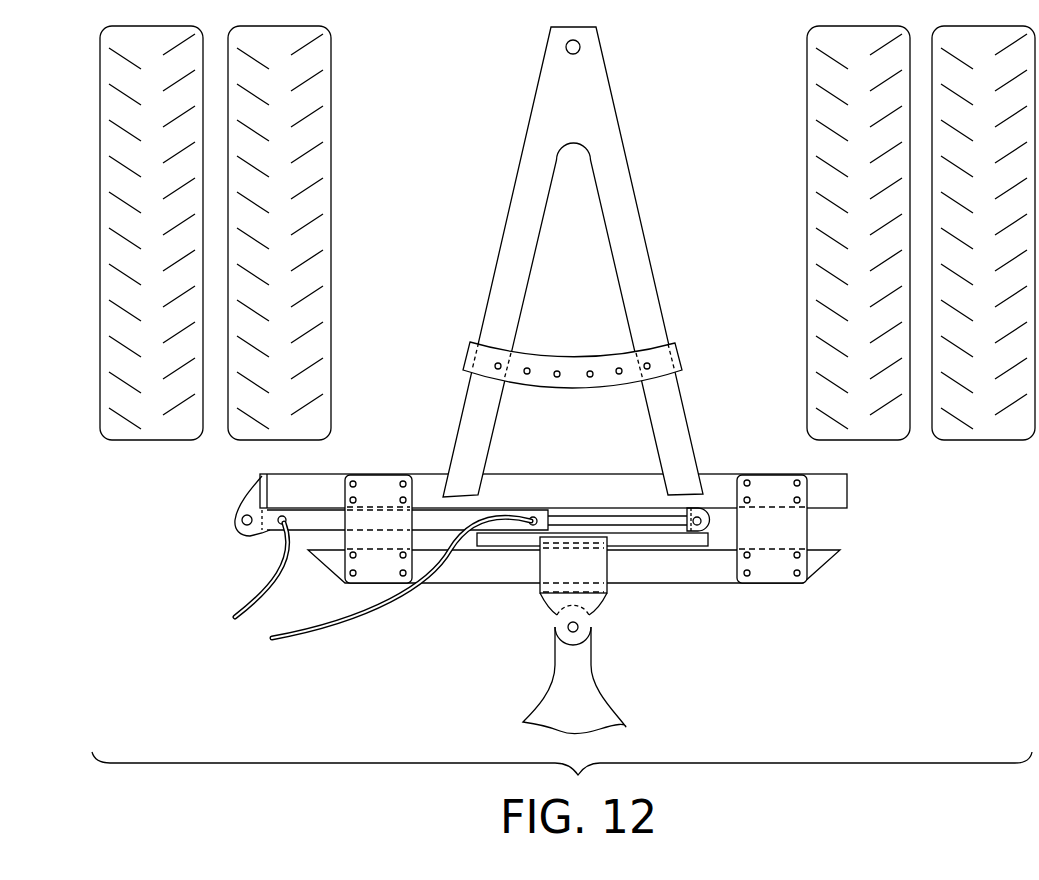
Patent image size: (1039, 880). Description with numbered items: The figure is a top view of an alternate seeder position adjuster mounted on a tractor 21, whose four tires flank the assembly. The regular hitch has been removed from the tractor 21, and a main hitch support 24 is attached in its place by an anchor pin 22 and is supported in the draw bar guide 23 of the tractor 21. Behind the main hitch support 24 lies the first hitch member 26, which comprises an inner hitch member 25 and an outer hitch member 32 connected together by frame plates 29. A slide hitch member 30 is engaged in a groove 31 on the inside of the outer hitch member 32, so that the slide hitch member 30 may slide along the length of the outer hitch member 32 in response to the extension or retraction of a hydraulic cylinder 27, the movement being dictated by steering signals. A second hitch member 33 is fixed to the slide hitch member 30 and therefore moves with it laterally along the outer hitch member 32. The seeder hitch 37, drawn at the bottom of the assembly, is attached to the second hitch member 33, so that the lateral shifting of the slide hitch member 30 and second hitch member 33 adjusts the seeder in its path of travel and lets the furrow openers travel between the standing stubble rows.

The tractor 21 is at (308, 99).
The anchor pin 22 is at (580, 46).
The draw bar guide 23 is at (548, 368).
The main hitch support 24 is at (616, 195).
The inner hitch member 25 is at (303, 482).
The first hitch member 26 is at (252, 500).
The hydraulic cylinder 27 is at (310, 520).
The frame plates 29 is at (807, 526).
The slide hitch member 30 is at (667, 537).
The groove 31 is at (643, 545).
The outer hitch member 32 is at (473, 567).
The second hitch member 33 is at (543, 596).
The seeder hitch 37 is at (612, 698).